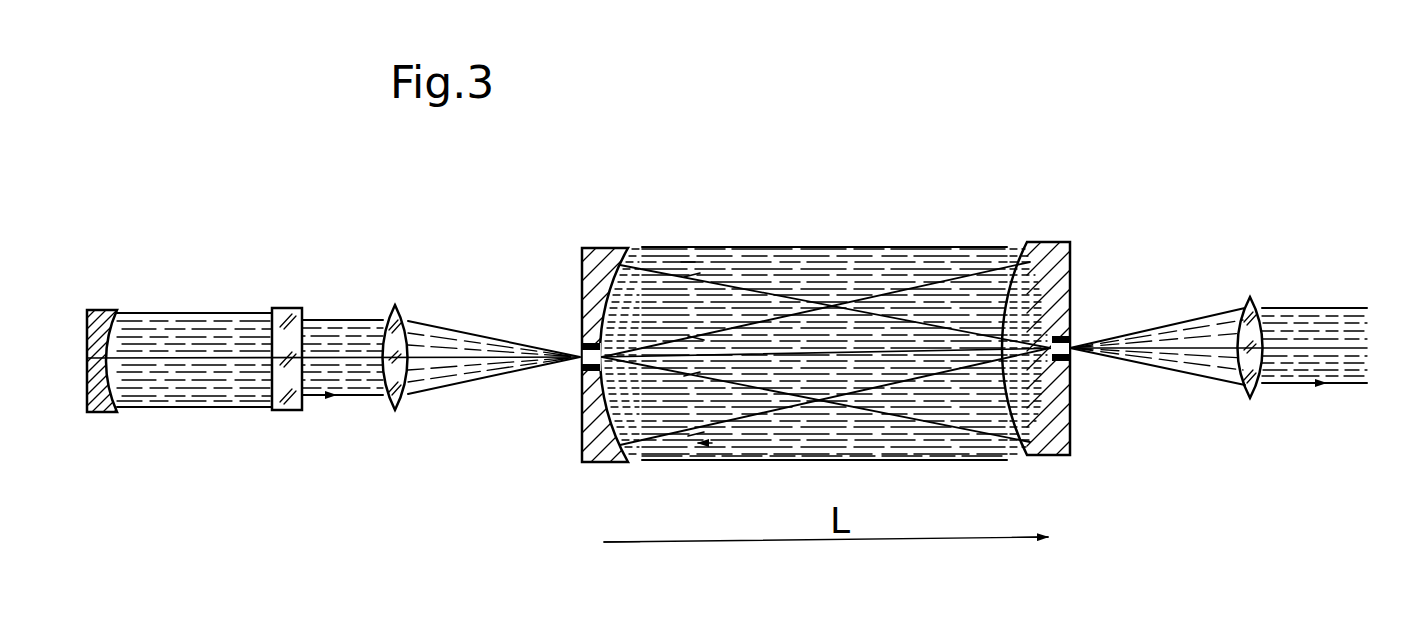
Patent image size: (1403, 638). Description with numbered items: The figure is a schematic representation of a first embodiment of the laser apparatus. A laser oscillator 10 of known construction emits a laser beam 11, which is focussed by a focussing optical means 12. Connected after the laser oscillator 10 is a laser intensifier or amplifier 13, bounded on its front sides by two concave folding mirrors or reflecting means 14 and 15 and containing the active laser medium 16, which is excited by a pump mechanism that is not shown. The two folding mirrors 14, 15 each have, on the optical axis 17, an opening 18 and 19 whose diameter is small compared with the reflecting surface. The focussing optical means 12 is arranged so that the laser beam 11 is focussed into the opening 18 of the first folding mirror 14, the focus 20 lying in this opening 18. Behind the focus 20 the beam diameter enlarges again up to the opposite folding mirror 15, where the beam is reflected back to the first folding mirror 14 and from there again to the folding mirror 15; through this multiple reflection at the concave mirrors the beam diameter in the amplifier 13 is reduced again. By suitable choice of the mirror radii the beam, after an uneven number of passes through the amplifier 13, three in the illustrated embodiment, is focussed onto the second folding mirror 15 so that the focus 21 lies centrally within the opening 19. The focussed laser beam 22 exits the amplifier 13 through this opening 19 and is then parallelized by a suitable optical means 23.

The laser oscillator 10 is at (171, 304).
The laser beam 11 is at (338, 372).
The focussing optical means 12 is at (392, 312).
The laser intensifier or amplifier 13 is at (756, 246).
The folding mirror or reflecting means 14 is at (625, 250).
The folding mirror or reflecting means 15 is at (1033, 250).
The active laser medium 16 is at (891, 444).
The optical axis 17 is at (803, 352).
The opening 18 is at (582, 376).
The opening 19 is at (1069, 362).
The focus 20 is at (582, 350).
The focus 21 is at (1069, 344).
The focussed laser beam 22 is at (1200, 334).
The optical means 23 is at (1256, 376).